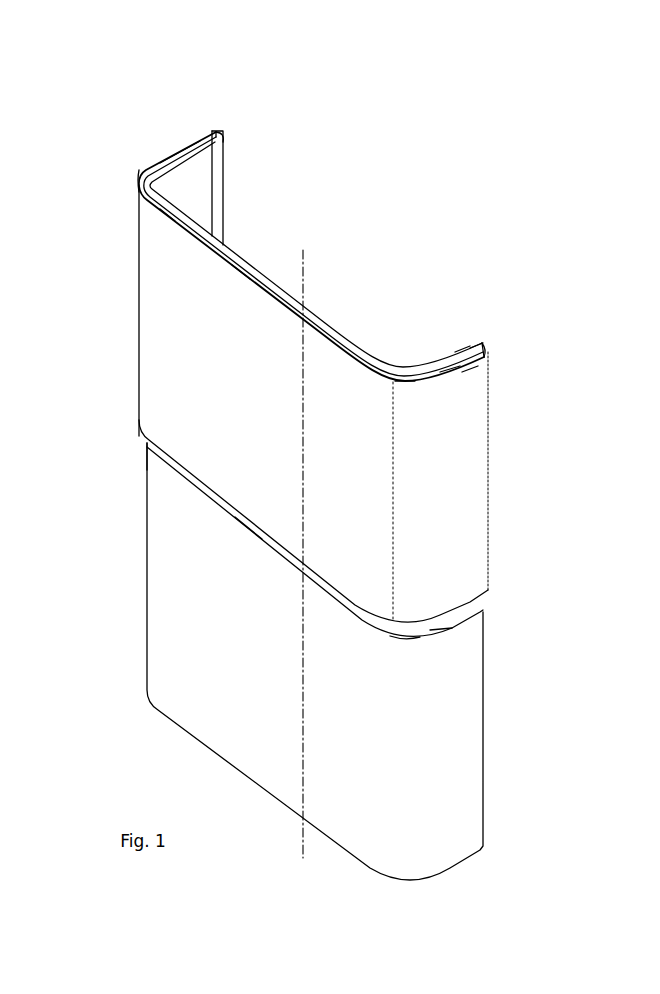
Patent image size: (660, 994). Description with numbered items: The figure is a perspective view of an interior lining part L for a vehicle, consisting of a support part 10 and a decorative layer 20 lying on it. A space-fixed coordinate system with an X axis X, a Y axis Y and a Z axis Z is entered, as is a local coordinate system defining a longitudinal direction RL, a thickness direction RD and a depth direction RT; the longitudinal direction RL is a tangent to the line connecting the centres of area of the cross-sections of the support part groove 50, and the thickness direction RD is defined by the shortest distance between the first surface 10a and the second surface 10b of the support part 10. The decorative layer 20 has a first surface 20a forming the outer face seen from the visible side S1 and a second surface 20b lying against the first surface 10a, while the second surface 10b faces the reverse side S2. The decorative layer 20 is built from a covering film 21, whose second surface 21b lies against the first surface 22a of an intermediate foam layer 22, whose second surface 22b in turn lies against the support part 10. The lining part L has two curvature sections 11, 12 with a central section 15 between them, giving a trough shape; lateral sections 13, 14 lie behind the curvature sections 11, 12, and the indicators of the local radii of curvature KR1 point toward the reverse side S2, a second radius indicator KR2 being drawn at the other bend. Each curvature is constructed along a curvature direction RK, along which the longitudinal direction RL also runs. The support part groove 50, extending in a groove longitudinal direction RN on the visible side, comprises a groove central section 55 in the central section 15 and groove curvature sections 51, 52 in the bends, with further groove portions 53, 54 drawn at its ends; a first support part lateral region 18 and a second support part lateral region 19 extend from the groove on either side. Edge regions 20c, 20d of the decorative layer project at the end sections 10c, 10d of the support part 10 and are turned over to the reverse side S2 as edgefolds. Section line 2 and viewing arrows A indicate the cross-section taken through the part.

The support part 10 is at (342, 245).
The first surface of the support part 10a is at (448, 368).
The second surface of the support part 10b is at (458, 345).
The end section of the support part 10c is at (226, 132).
The end section of the support part 10d is at (489, 347).
The curvature section 11 is at (328, 532).
The curvature section 12 is at (136, 181).
The lateral section 13 is at (470, 372).
The lateral section 14 is at (160, 157).
The central section 15 is at (335, 232).
The first support part lateral region 18 is at (492, 522).
The second support part lateral region 19 is at (458, 754).
The decorative layer 20 is at (347, 347).
The first surface of the decorative layer 20a is at (417, 381).
The second surface of the decorative layer 20b is at (483, 343).
The edge region 20c is at (213, 128).
The edge region 20d is at (492, 351).
The covering film 21 is at (200, 242).
The second surface of the covering film 21b is at (226, 242).
The intermediate layer 22 is at (226, 262).
The first surface of the intermediate layer 22a is at (174, 216).
The second surface of the intermediate layer 22b is at (238, 262).
The section line 2 is at (304, 555).
The support part groove 50 is at (289, 586).
The groove curvature section 51 is at (402, 641).
The groove curvature section 52 is at (147, 450).
The step end 53 is at (436, 626).
The step upper edge 54 is at (137, 443).
The groove central section 55 is at (247, 534).
The viewing direction A is at (305, 535).
The lining part L is at (422, 135).
The local radius of curvature KR1 is at (403, 364).
The second curvature radius KR2 is at (160, 180).
The curvature direction RK is at (423, 485).
The depth direction RT is at (158, 427).
The thickness direction RD is at (158, 427).
The longitudinal direction RL is at (158, 427).
The groove longitudinal direction RN is at (225, 508).
The visible side S1 is at (78, 402).
The reverse side S2 is at (491, 167).
The X axis X is at (42, 258).
The Y axis Y is at (42, 258).
The Z axis Z is at (42, 258).